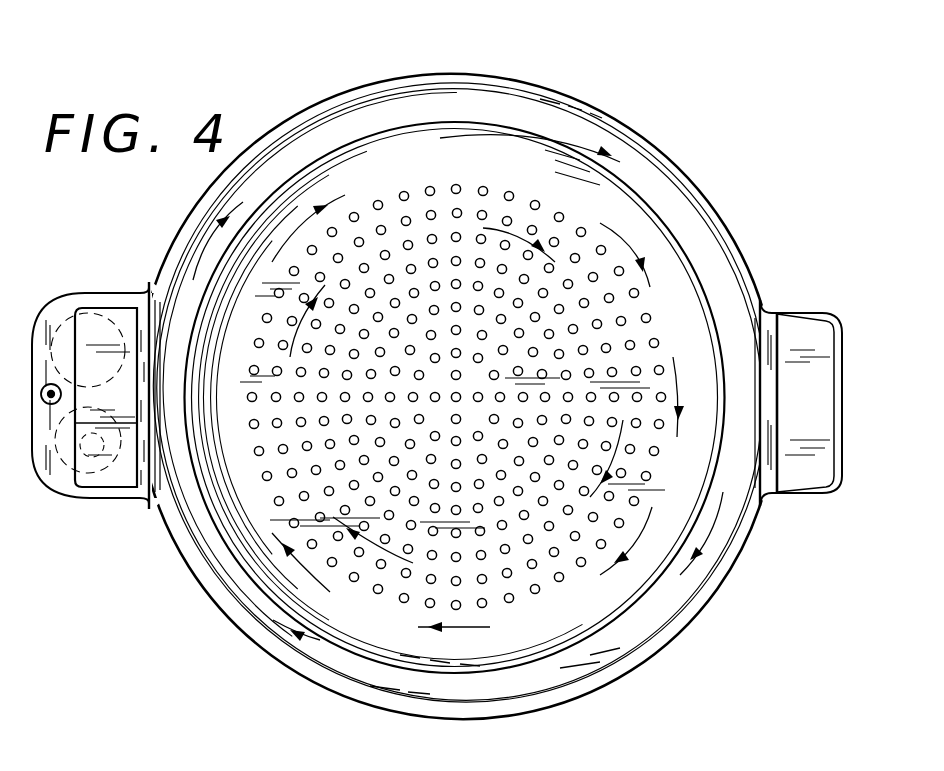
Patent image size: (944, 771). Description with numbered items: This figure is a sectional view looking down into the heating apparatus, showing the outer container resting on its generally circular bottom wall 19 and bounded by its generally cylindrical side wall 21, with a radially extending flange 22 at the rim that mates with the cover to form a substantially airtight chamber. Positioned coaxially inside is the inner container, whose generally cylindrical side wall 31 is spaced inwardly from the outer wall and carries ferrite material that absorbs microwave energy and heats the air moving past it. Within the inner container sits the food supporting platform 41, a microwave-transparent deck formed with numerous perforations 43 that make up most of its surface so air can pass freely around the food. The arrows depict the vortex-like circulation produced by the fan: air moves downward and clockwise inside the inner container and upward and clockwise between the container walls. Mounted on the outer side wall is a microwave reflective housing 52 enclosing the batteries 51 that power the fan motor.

The bottom wall 19 is at (527, 677).
The side wall 21 is at (424, 75).
The flange 22 is at (122, 320).
The side wall 31 is at (322, 157).
The food supporting platform 41 is at (568, 614).
The perforations 43 is at (594, 327).
The batteries 51 is at (68, 320).
The microwave reflective housing 52 is at (48, 473).